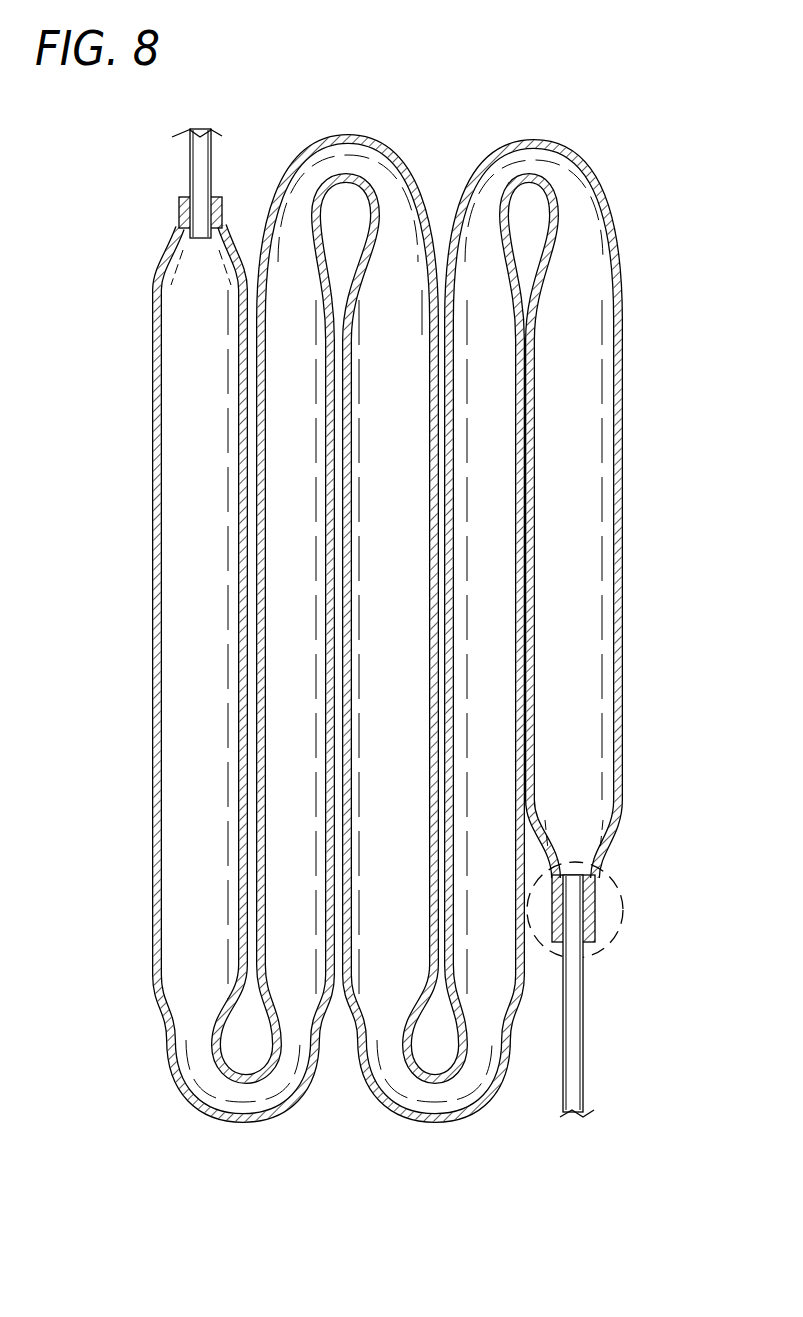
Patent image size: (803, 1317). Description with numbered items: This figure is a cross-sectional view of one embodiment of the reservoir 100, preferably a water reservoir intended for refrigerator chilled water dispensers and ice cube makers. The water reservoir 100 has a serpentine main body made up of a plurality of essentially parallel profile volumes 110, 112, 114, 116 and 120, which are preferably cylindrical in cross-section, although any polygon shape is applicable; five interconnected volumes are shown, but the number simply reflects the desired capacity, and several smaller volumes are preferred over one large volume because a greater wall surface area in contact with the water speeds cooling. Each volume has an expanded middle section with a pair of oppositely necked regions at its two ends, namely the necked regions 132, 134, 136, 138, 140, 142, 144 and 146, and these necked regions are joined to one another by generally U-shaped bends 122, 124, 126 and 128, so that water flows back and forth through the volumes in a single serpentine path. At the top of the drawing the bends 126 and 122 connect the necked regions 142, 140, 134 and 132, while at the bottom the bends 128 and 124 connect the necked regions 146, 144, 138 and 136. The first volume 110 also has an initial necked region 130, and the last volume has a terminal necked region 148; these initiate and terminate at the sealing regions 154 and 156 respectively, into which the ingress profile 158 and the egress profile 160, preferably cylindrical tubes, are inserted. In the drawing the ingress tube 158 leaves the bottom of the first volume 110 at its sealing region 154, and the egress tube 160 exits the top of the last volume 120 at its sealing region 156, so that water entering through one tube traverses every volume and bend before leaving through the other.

The reservoir 100 is at (515, 44).
The first profile volume 110 is at (586, 465).
The profile volume 112 is at (506, 548).
The profile volume 114 is at (406, 465).
The profile volume 116 is at (309, 548).
The fifth channel 120 is at (206, 465).
The U-shaped bend 122 is at (532, 137).
The U-shaped bend 124 is at (436, 1122).
The U-shaped bend 126 is at (342, 133).
The U-shaped bend 128 is at (243, 1122).
The initial necked region 130 is at (612, 847).
The necked region 132 is at (612, 232).
The necked region 134 is at (457, 232).
The necked region 136 is at (512, 1020).
The necked region 138 is at (359, 1035).
The necked region 140 is at (418, 233).
The necked region 142 is at (266, 233).
The necked region 144 is at (320, 1033).
The necked region 146 is at (165, 1024).
The terminal necked region 148 is at (171, 256).
The sealing region 154 is at (598, 942).
The sealing region 156 is at (178, 199).
The ingress profile 158 is at (585, 1032).
The egress profile 160 is at (188, 157).